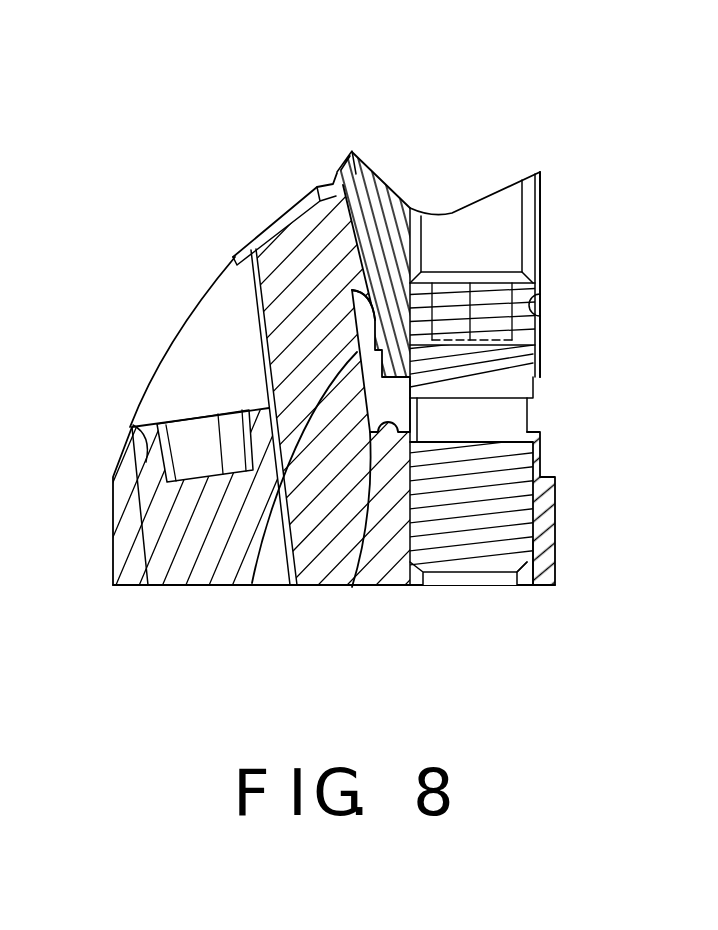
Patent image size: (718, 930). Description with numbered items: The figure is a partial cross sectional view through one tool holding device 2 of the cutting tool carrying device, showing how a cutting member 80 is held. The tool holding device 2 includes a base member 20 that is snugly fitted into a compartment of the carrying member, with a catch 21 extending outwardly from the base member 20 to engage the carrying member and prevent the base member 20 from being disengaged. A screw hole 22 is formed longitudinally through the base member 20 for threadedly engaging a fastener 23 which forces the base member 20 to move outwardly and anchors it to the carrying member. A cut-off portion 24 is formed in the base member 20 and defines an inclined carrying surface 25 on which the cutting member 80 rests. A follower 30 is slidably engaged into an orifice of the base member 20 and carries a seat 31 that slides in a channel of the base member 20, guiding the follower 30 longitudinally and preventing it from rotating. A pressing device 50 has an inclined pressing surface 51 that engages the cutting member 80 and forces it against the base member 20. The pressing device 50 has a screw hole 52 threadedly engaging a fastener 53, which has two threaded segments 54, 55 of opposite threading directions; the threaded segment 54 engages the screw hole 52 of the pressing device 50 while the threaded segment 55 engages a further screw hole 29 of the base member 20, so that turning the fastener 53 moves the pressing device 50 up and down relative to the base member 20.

The tool holding device 2 is at (133, 216).
The base member 20 is at (118, 538).
The catch 21 is at (538, 527).
The screw hole 22 is at (132, 428).
The fastener 23 is at (192, 427).
The cut-off portion 24 is at (355, 587).
The inclined carrying surface 25 is at (345, 250).
The further screw hole 29 is at (533, 540).
The follower 30 is at (248, 248).
The seat 31 is at (250, 587).
The pressing device 50 is at (492, 212).
The inclined pressing surface 51 is at (382, 203).
The screw hole 52 is at (535, 301).
The fastener 53 is at (508, 420).
The threaded segment 54 is at (487, 370).
The threaded segment 55 is at (473, 540).
The cutting member 80 is at (350, 150).